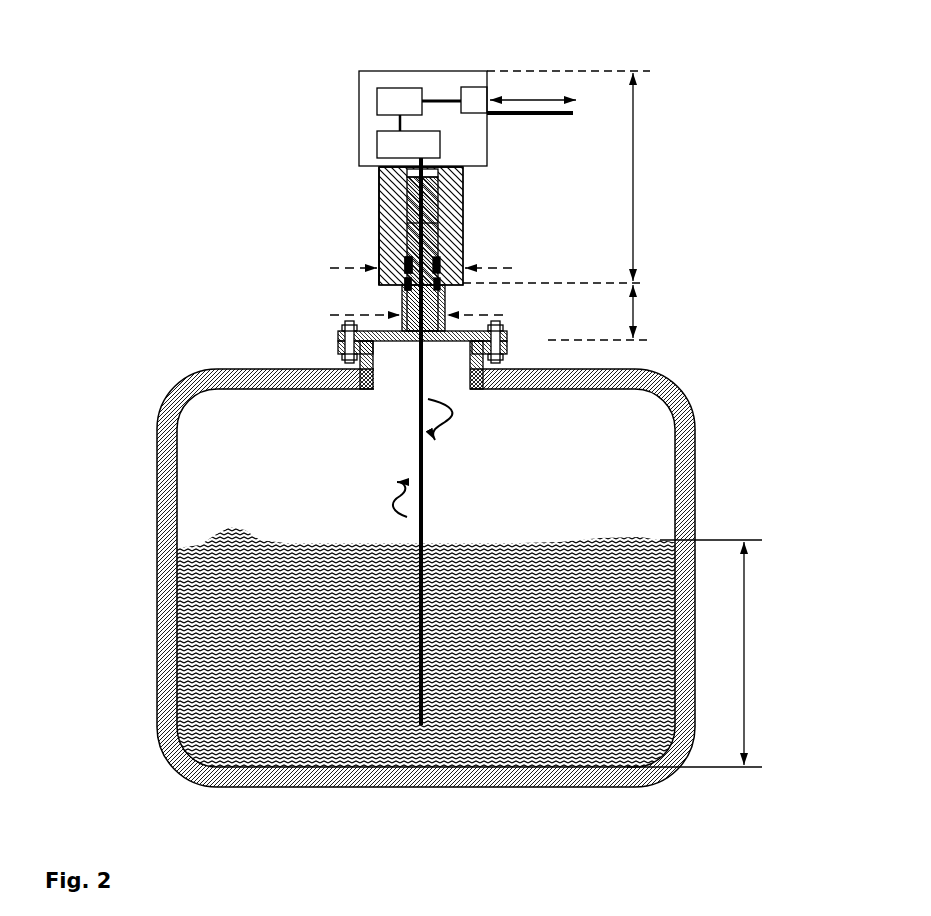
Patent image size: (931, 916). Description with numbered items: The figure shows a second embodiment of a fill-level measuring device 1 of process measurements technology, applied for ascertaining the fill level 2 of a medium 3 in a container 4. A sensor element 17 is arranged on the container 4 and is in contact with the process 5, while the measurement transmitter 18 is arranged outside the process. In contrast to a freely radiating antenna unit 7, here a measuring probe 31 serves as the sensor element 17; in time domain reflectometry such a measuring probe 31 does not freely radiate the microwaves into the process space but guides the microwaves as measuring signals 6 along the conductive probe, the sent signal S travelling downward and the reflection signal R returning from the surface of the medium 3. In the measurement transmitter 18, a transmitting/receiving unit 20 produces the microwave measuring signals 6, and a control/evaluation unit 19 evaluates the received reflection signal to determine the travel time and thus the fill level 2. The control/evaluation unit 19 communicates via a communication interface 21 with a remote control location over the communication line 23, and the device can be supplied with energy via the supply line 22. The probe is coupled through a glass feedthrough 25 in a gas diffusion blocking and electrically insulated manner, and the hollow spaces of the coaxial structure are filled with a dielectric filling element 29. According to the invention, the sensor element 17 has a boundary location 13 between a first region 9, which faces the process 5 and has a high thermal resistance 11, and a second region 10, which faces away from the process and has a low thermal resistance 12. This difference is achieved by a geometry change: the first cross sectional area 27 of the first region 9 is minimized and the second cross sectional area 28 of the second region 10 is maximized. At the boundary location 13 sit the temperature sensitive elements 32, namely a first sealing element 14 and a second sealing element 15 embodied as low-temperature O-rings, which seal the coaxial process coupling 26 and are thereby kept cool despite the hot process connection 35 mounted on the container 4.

The measuring device 1 is at (421, 368).
The fill level 2 is at (702, 653).
The medium 3 is at (258, 540).
The container 4 is at (687, 397).
The process 5 is at (577, 427).
The measuring signal 6 is at (450, 433).
The antenna unit 7 is at (303, 226).
The first region 9 is at (636, 310).
The second region 10 is at (634, 145).
The high thermal resistance 11 is at (550, 323).
The low thermal resistance 12 is at (484, 218).
The boundary location 13 is at (463, 290).
The first sealing element 14 is at (402, 288).
The second sealing element 15 is at (380, 275).
The sensor element 17 is at (238, 247).
The measurement transmitter 18 is at (481, 152).
The control/evaluation unit 19 is at (387, 99).
The transmitting/receiving unit 20 is at (392, 144).
The communication interface 21 is at (475, 98).
The supply line 22 is at (550, 117).
The communication line 23 is at (550, 99).
The glass feedthrough 25 is at (380, 173).
The coaxial process coupling 26 is at (327, 217).
The first cross sectional area 27 is at (432, 316).
The second cross sectional area 28 is at (439, 268).
The dielectric filling element 29 is at (410, 340).
The measuring probe 31 is at (380, 242).
The temperature sensitive element 32 is at (323, 296).
The process connection 35 is at (323, 340).